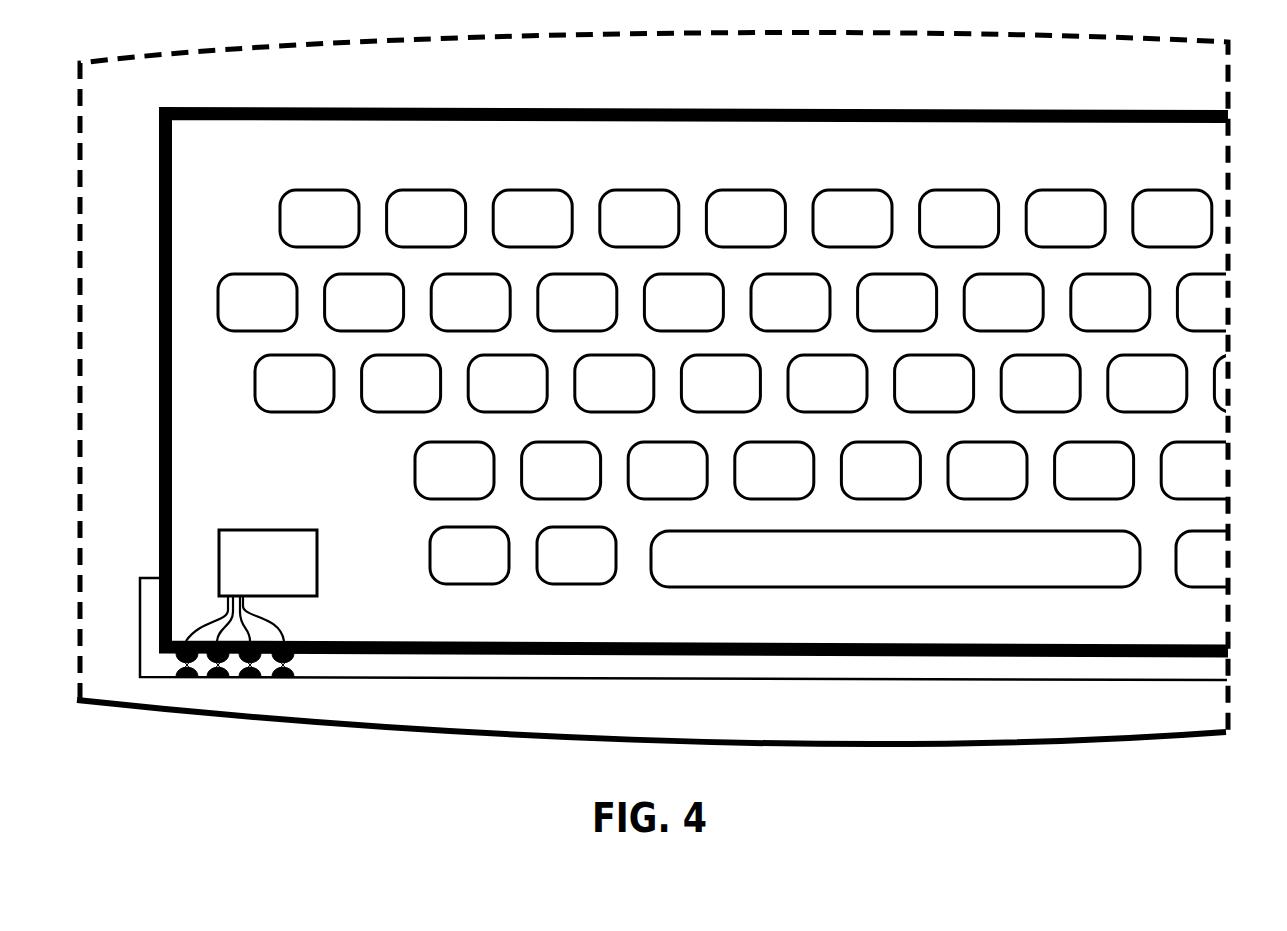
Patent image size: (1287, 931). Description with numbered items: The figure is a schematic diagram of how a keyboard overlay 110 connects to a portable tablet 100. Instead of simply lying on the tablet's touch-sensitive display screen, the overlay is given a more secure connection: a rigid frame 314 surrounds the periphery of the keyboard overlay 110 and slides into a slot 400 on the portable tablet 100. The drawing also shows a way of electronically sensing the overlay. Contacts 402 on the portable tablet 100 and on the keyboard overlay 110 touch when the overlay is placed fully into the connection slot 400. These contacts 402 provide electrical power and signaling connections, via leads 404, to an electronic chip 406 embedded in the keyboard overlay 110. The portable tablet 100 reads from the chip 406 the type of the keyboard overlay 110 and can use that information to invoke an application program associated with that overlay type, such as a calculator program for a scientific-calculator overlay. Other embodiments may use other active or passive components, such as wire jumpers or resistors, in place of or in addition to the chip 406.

The portable tablet 100 is at (677, 74).
The keyboard overlay 110 is at (677, 164).
The rigid frame 314 is at (725, 107).
The slot 400 is at (138, 627).
The contacts 402 is at (187, 677).
The leads 404 is at (235, 620).
The electronic chip 406 is at (290, 576).